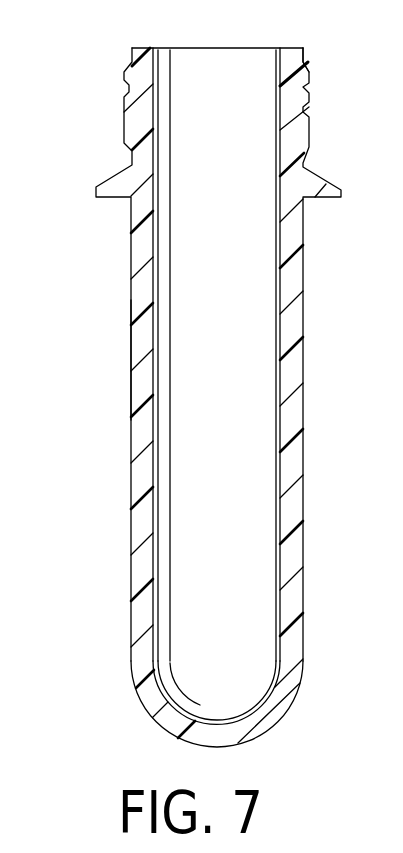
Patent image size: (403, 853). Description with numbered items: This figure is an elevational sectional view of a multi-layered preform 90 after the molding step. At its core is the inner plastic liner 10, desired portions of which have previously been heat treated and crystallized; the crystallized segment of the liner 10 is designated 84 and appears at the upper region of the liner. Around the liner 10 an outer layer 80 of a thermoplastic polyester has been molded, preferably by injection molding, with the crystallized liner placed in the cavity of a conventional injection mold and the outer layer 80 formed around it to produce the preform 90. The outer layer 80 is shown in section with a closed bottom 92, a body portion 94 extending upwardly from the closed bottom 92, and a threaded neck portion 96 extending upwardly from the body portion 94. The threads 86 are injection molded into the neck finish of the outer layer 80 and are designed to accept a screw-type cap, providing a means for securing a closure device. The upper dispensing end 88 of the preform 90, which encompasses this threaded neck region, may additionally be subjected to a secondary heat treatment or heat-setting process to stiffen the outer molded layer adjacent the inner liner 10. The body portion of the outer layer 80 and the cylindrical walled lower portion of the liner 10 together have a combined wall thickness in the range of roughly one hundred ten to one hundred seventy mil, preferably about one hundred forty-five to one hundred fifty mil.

The liner 10 is at (283, 272).
The outer layer 80 is at (292, 318).
The crystallized segment of the liner 84 is at (272, 52).
The threads 86 is at (310, 120).
The upper dispensing end 88 is at (90, 48).
The multi-layered preform 90 is at (98, 342).
The closed bottom end 92 is at (285, 692).
The body portion 94 is at (293, 473).
The threaded neck portion 96 is at (303, 74).